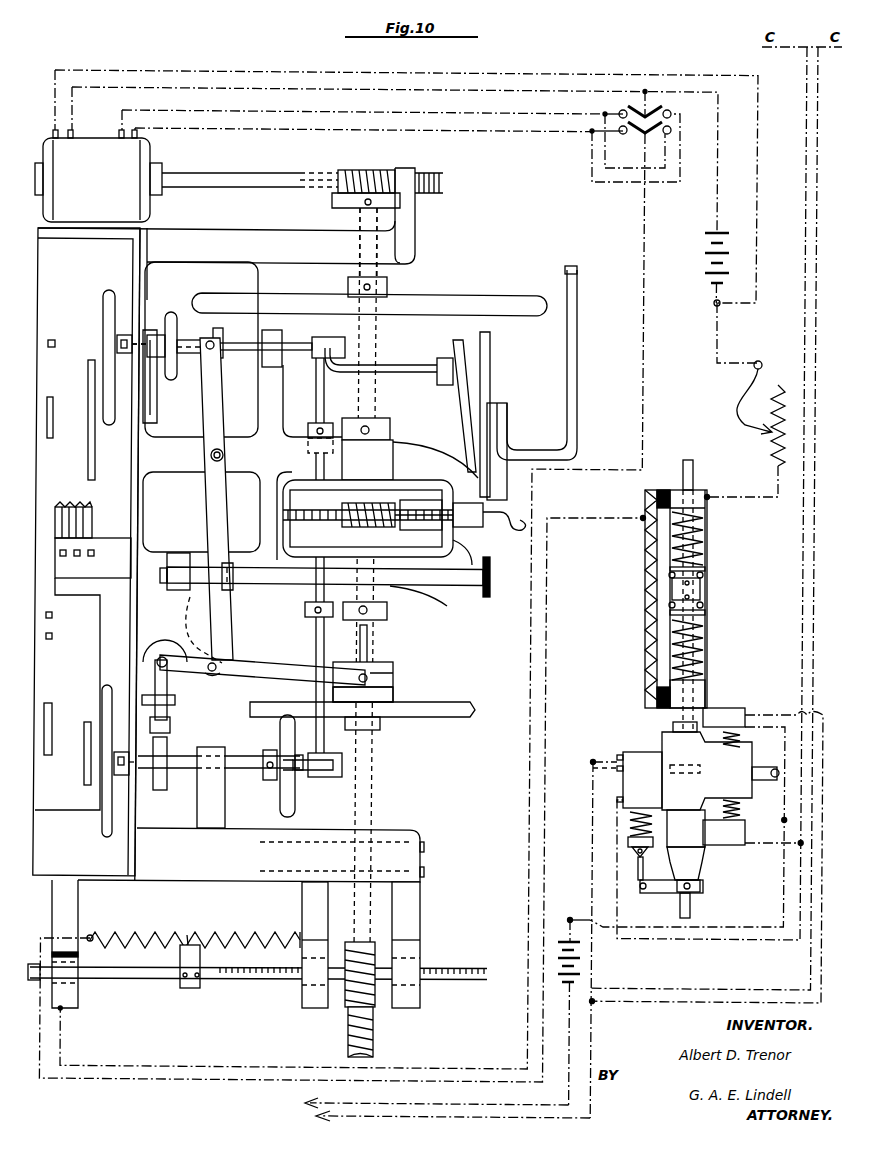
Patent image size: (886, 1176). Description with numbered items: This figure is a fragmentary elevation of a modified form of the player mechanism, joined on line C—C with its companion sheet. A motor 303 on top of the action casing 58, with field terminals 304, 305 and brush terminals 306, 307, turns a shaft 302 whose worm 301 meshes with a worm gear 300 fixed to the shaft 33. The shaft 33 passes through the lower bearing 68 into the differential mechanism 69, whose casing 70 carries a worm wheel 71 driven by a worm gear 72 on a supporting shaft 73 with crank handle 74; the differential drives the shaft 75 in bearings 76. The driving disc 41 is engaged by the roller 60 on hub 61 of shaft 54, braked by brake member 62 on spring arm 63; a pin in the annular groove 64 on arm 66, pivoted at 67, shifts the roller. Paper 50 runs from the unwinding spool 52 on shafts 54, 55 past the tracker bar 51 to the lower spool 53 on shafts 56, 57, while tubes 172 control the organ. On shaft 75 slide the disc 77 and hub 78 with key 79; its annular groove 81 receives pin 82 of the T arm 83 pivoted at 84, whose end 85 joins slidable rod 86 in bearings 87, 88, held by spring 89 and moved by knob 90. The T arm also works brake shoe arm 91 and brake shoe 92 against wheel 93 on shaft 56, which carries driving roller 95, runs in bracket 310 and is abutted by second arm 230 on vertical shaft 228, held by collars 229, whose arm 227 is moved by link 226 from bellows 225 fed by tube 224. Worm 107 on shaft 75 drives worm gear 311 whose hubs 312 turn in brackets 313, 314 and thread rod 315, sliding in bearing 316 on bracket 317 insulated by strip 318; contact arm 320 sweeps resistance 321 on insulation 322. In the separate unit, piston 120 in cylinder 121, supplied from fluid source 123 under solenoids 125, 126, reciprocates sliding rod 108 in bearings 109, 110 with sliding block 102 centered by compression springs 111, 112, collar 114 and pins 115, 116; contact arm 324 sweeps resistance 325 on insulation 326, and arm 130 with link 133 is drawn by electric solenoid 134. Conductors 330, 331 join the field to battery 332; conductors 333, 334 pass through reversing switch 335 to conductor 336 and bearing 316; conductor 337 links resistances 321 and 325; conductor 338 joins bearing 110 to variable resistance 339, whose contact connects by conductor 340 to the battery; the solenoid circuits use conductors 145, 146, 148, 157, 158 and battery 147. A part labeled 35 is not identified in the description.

The shaft 33 is at (355, 220).
The housing 35 is at (230, 232).
The driving disc 41 is at (255, 298).
The paper 50 is at (95, 495).
The tracker bar 51 is at (100, 578).
The unwinding spool 52 is at (105, 285).
The lower spool 53 is at (105, 832).
The shaft 54 is at (264, 334).
The shaft 55 is at (117, 341).
The shaft 56 is at (236, 758).
The shaft 57 is at (114, 770).
The action casing 58 is at (147, 290).
The roller 60 is at (177, 323).
The hub 61 is at (183, 360).
The brake member 62 is at (150, 330).
The spring arm 63 is at (157, 400).
The annular groove 64 is at (218, 330).
The arm 66 is at (216, 499).
The pivot 67 is at (224, 455).
The lower bearing 68 is at (394, 450).
The differential mechanism 69 is at (420, 509).
The casing 70 is at (438, 492).
The worm wheel 71 is at (432, 527).
The worm gear 72 is at (352, 506).
The supporting shaft 73 is at (405, 527).
The crank handle 74 is at (514, 530).
The shaft 75 is at (373, 649).
The bearings 76 is at (350, 620).
The disc 77 is at (455, 703).
The hub 78 is at (394, 697).
The key 79 is at (368, 632).
The annular groove 81 is at (387, 680).
The pin 82 is at (394, 665).
The T arm 83 is at (247, 663).
The pivot 84 is at (216, 672).
The end 85 is at (226, 612).
The slidable rod 86 is at (285, 569).
The bearing 87 is at (178, 553).
The bearing 88 is at (434, 531).
The spring 89 is at (474, 560).
The knob 90 is at (483, 590).
The brake shoe arm 91 is at (167, 685).
The brake shoe 92 is at (170, 724).
The wheel 93 is at (160, 790).
The driving roller 95 is at (282, 800).
The sliding block 102 is at (705, 614).
The worm 107 is at (376, 950).
The sliding rod 108 is at (683, 479).
The bearing 109 is at (706, 697).
The bearing 110 is at (700, 498).
The compression spring 111 is at (700, 648).
The compression spring 112 is at (700, 530).
The collar 114 is at (705, 569).
The pins 115 is at (668, 606).
The pins 116 is at (669, 576).
The piston 120 is at (700, 768).
The cylinder 121 is at (665, 745).
The source of expansible fluid 123 is at (765, 767).
The solenoid 125 is at (746, 717).
The solenoid 126 is at (746, 831).
The arm 130 is at (700, 887).
The link 133 is at (640, 886).
The electric solenoid 134 is at (639, 780).
The conductor 145 is at (806, 112).
The conductor 146 is at (815, 80).
The battery 147 is at (590, 970).
The common conductor 148 is at (588, 768).
The conductor 157 is at (410, 1106).
The conductor 158 is at (405, 1119).
The tubes 172 is at (85, 523).
The tube 224 is at (565, 283).
The bellows 225 is at (490, 348).
The link 226 is at (405, 365).
The arm 227 is at (345, 328).
The vertical shaft 228 is at (316, 389).
The collars 229 is at (315, 423).
The second arm 230 is at (338, 777).
The worm gear 300 is at (444, 180).
The worm 301 is at (378, 172).
The shaft 302 is at (205, 174).
The motor 303 is at (98, 176).
The terminal 304 is at (60, 128).
The terminal 305 is at (74, 128).
The terminal 306 is at (124, 128).
The terminal 307 is at (138, 130).
The bracket 310 is at (211, 787).
The worm gear 311 is at (374, 1044).
The hubs 312 is at (330, 1005).
The bracket 313 is at (420, 895).
The bracket 314 is at (302, 893).
The rod 315 is at (135, 978).
The bearing 316 is at (78, 995).
The bracket 317 is at (78, 897).
The strip of insulation 318 is at (80, 955).
The contact arm 320 is at (195, 940).
The resistance 321 is at (265, 935).
The strip of insulation 322 is at (162, 934).
The contact arm 324 is at (690, 588).
The resistance 325 is at (645, 634).
The strip of insulating material 326 is at (648, 697).
The conductor 330 is at (738, 75).
The conductor 331 is at (719, 112).
The battery 332 is at (705, 268).
The conductor 333 is at (547, 114).
The conductor 334 is at (497, 132).
The reversing switch 335 is at (636, 144).
The conductor 336 is at (645, 232).
The conductor 337 is at (135, 1082).
The conductor 338 is at (737, 498).
The variable resistance 339 is at (772, 443).
The conductor 340 is at (748, 370).